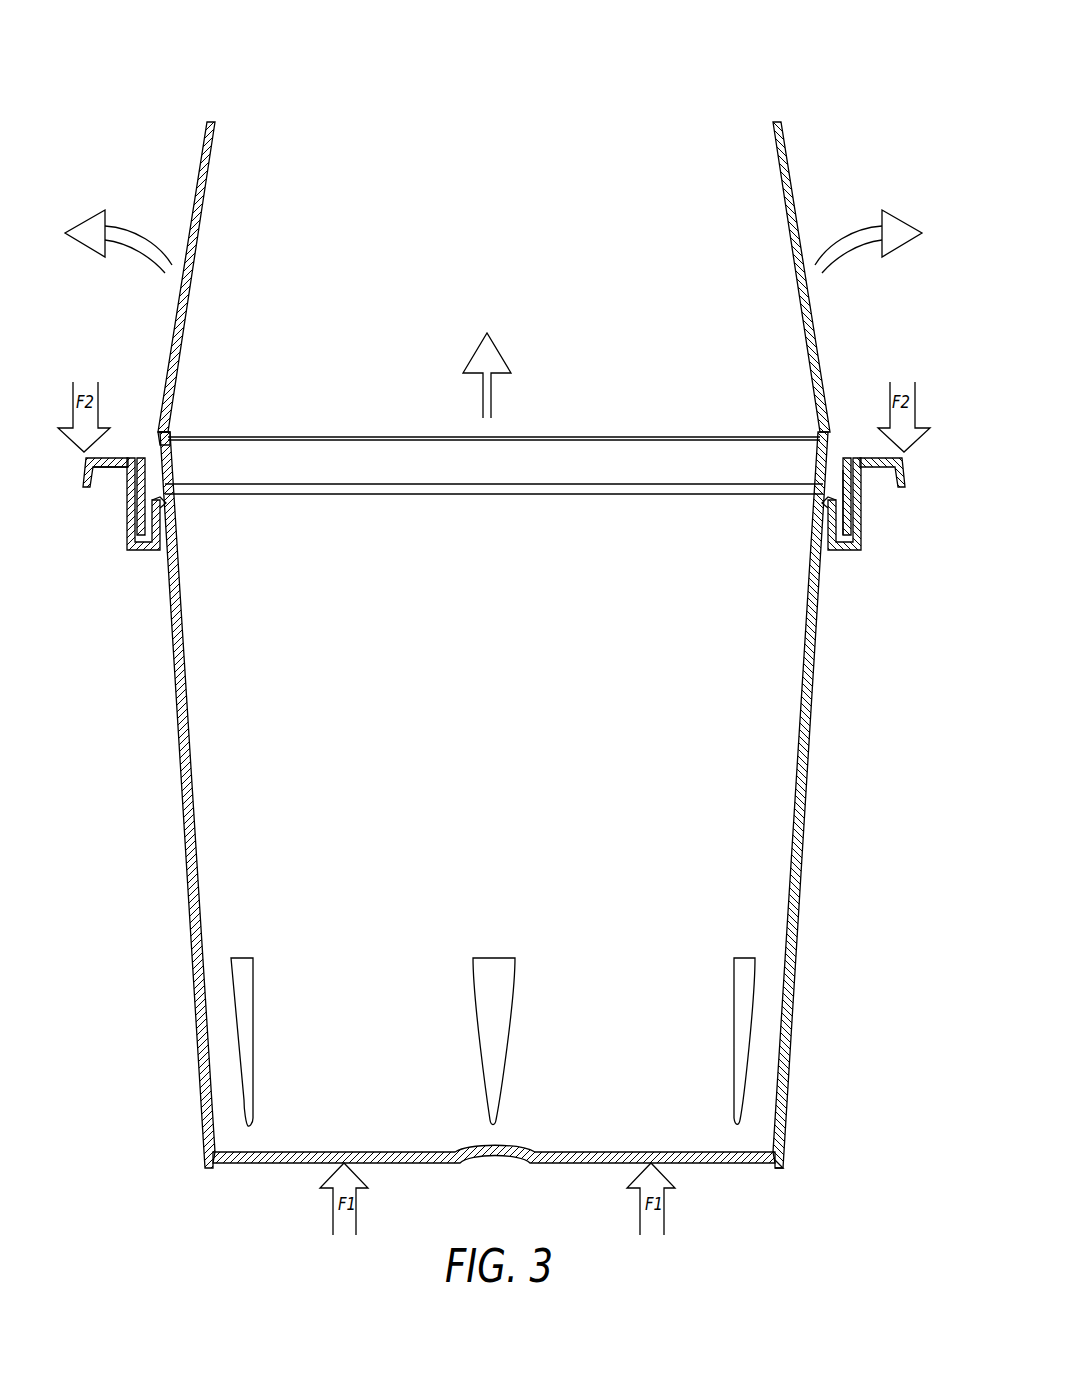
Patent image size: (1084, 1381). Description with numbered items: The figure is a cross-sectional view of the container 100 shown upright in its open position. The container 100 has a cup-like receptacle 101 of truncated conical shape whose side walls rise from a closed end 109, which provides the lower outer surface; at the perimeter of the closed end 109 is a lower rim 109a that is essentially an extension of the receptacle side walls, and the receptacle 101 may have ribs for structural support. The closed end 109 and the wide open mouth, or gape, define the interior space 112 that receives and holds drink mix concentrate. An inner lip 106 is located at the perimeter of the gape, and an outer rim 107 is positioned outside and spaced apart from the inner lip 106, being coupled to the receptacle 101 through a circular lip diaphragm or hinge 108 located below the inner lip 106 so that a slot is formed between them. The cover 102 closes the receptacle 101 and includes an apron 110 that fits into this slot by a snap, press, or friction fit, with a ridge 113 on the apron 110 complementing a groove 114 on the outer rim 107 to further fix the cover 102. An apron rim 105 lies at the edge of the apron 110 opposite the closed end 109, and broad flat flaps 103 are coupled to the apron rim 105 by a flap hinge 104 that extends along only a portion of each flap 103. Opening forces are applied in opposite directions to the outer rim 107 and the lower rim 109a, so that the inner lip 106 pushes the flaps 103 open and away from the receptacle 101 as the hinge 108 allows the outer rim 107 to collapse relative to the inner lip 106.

The container 100 is at (747, 68).
The receptacle 101 is at (800, 821).
The cover 102 is at (158, 192).
The flaps 103 is at (785, 155).
The flap hinge 104 is at (141, 456).
The apron rim 105 is at (127, 462).
The inner lip 106 is at (168, 455).
The outer rim 107 is at (858, 462).
The circular lip diaphragm or hinge 108 is at (152, 545).
The closed end 109 is at (287, 1165).
The lower rim 109a is at (782, 1165).
The apron 110 is at (127, 520).
The interior space 112 is at (602, 568).
The ridge 113 is at (132, 485).
The groove 114 is at (858, 487).